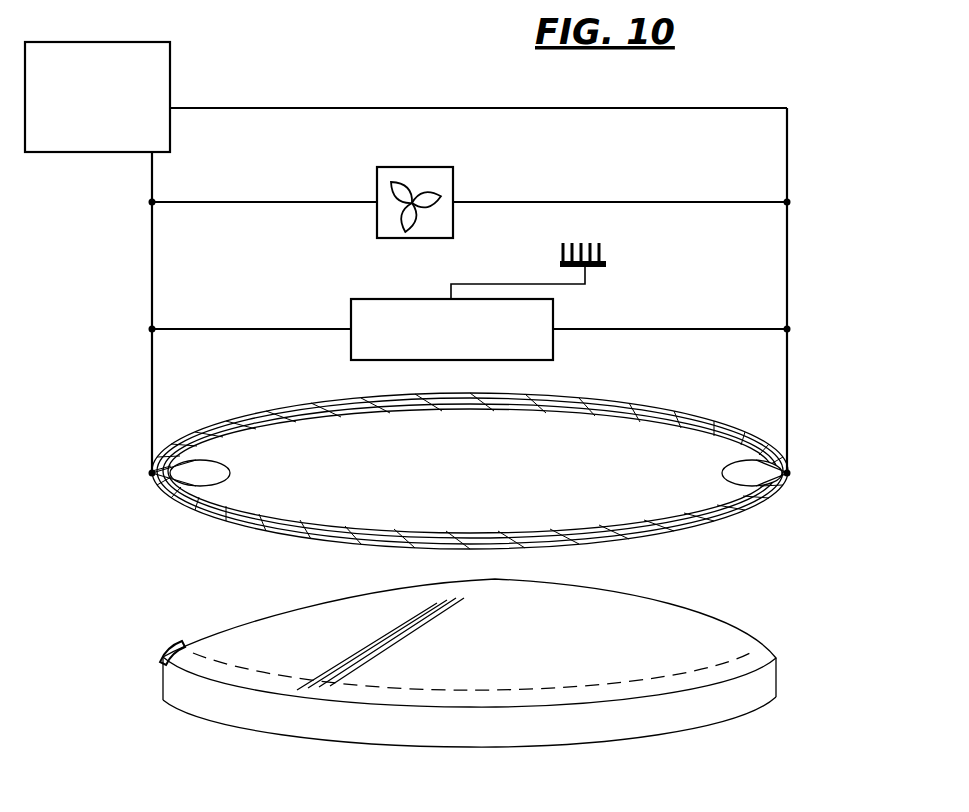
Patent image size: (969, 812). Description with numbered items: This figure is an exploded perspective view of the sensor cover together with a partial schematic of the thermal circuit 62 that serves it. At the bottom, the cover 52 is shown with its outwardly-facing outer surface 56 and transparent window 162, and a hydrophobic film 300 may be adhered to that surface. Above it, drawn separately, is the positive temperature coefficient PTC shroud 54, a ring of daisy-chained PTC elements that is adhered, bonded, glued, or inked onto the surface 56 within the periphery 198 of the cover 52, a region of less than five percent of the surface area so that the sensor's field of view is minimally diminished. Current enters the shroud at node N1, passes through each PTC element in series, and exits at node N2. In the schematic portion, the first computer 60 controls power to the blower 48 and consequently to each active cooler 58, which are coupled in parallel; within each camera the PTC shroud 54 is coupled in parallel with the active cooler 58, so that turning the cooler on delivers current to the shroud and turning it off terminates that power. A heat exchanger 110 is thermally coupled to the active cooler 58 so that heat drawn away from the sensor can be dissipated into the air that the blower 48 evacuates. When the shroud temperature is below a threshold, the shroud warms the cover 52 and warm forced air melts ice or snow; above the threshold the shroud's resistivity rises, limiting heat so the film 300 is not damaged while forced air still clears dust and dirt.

The blower 48 is at (456, 190).
The cover 52 is at (742, 626).
The PTC shroud 54 is at (585, 392).
The outer surface 56 is at (646, 628).
The active cooler 58 is at (452, 329).
The first computer 60 is at (842, 384).
The thermal circuit 62 is at (114, 250).
The heat exchanger 110 is at (608, 256).
The transparent window 162 is at (543, 624).
The periphery 198 is at (170, 648).
The hydrophobic film 300 is at (340, 635).
The node N1 is at (119, 483).
The node N2 is at (819, 483).